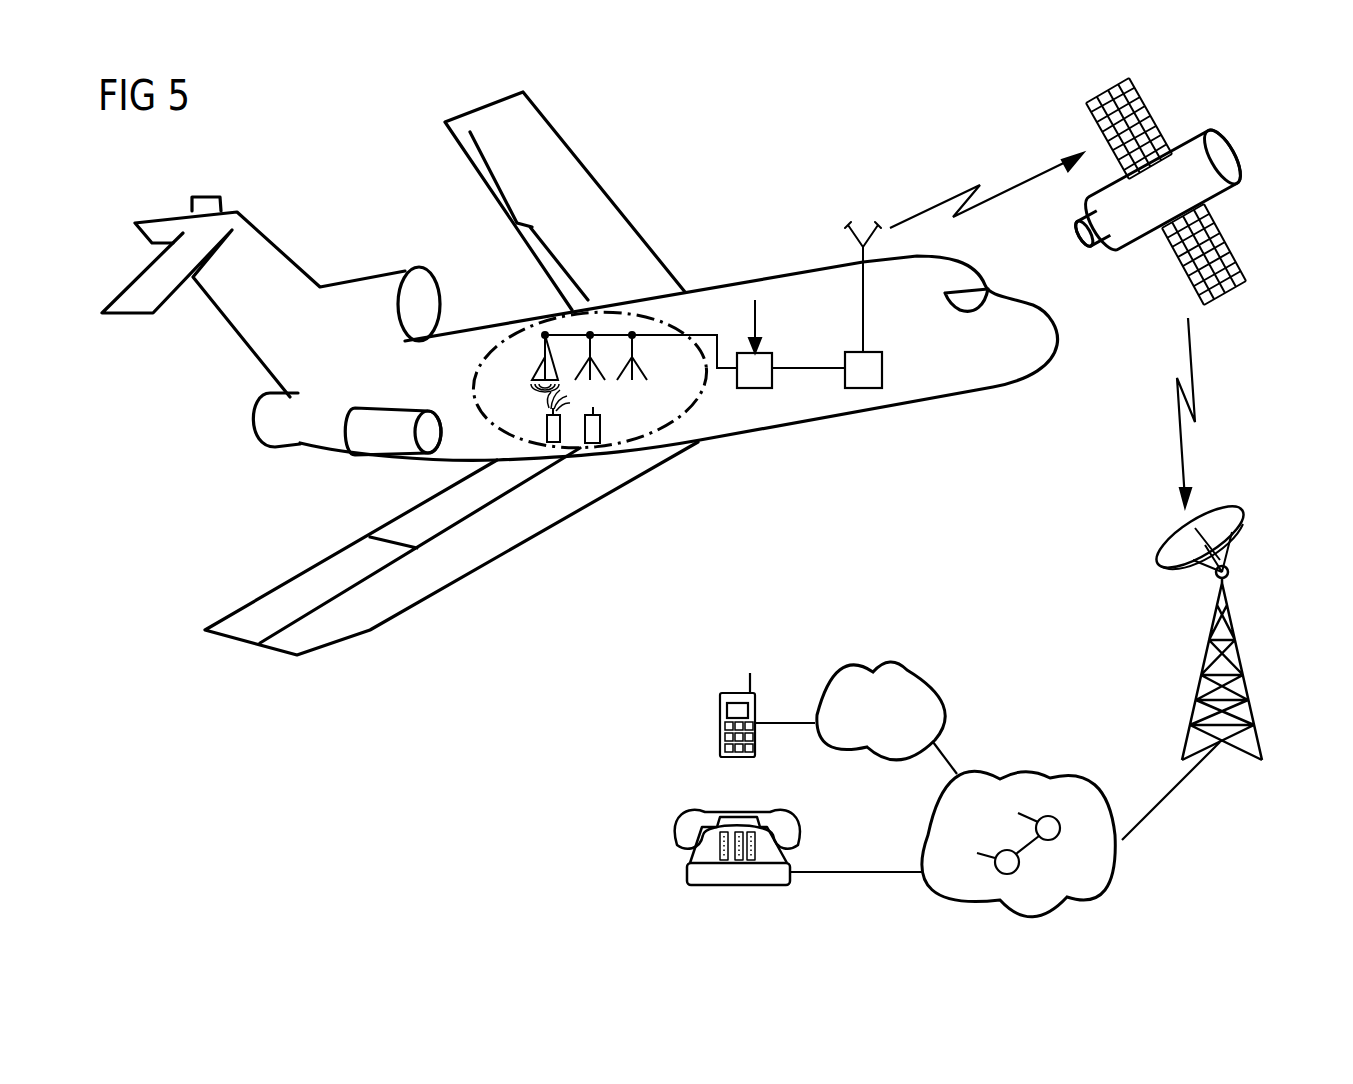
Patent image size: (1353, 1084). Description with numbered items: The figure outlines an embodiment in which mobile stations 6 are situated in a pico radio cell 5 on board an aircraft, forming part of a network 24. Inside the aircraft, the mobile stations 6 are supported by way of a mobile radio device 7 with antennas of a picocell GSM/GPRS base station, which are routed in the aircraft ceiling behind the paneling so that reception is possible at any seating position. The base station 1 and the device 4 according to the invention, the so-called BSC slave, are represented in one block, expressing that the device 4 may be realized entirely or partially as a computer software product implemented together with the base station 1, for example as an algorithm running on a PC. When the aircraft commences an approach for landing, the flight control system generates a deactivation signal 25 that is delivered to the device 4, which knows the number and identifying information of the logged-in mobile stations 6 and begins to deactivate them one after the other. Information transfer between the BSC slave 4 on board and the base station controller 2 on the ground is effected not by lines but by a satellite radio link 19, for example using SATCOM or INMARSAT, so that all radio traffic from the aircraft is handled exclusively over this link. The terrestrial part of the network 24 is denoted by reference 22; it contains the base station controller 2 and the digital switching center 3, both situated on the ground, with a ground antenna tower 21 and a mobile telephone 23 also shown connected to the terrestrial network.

The base station 1 is at (772, 375).
The base station controller 2 is at (1057, 840).
The digital switching center 3 is at (1007, 850).
The device 4 is at (753, 388).
The pico radio cell 5 is at (475, 390).
The mobile stations 6 is at (602, 427).
The mobile radio device 7 is at (538, 398).
The satellite radio link 19 is at (935, 203).
The ground station antenna tower 21 is at (1247, 678).
The terrestrial part of the network 22 is at (1022, 772).
The mobile telephone 23 is at (718, 725).
The network 24 is at (330, 785).
The deactivation signal 25 is at (769, 326).